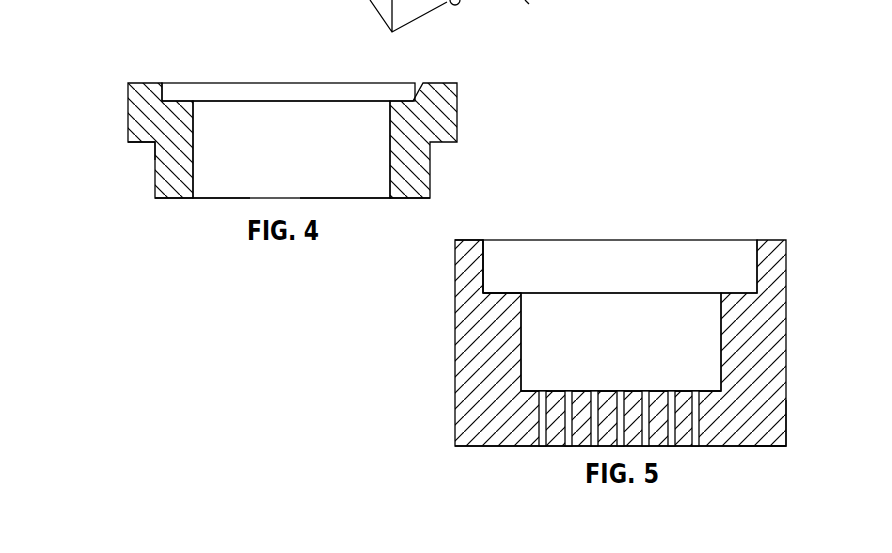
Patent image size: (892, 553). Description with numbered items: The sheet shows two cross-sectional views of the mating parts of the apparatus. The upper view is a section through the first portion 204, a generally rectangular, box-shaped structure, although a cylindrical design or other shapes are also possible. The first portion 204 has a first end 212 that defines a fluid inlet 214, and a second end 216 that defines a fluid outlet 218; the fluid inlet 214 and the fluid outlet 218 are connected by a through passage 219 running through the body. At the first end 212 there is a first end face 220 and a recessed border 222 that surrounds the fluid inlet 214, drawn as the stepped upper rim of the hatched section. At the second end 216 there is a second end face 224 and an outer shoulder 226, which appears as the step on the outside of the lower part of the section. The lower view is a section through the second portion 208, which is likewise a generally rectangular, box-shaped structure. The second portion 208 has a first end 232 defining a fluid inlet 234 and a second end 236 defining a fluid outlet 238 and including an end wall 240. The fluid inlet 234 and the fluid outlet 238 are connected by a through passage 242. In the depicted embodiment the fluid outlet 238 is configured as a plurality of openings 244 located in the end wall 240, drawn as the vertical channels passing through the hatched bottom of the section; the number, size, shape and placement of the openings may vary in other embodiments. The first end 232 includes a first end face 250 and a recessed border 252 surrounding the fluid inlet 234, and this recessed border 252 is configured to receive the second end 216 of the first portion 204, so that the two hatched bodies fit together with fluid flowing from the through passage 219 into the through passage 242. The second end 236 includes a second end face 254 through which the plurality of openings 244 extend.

In FIG. 4, the first portion 204 is at (88, 232).
In FIG. 4, the first end 212 is at (158, 52).
In FIG. 4, the fluid inlet 214 is at (273, 78).
In FIG. 4, the second end 216 is at (217, 217).
In FIG. 4, the fluid outlet 218 is at (340, 203).
In FIG. 4, the through passage 219 is at (307, 160).
In FIG. 4, the first end face 220 is at (138, 83).
In FIG. 4, the recessed border 222 is at (425, 82).
In FIG. 4, the second end face 224 is at (168, 200).
In FIG. 4, the outer shoulder 226 is at (138, 147).
In FIG. 5, the second portion 208 is at (806, 172).
In FIG. 5, the first end 232 is at (700, 212).
In FIG. 5, the fluid inlet 234 is at (618, 253).
In FIG. 5, the second end 236 is at (467, 477).
In FIG. 5, the fluid outlet 238 is at (681, 450).
In FIG. 5, the end wall 240 is at (683, 389).
In FIG. 5, the through passage 242 is at (628, 346).
In FIG. 5, the plurality of openings 244 is at (590, 450).
In FIG. 5, the first end face 250 is at (466, 239).
In FIG. 5, the recessed border 252 is at (503, 291).
In FIG. 5, the second end face 254 is at (748, 447).